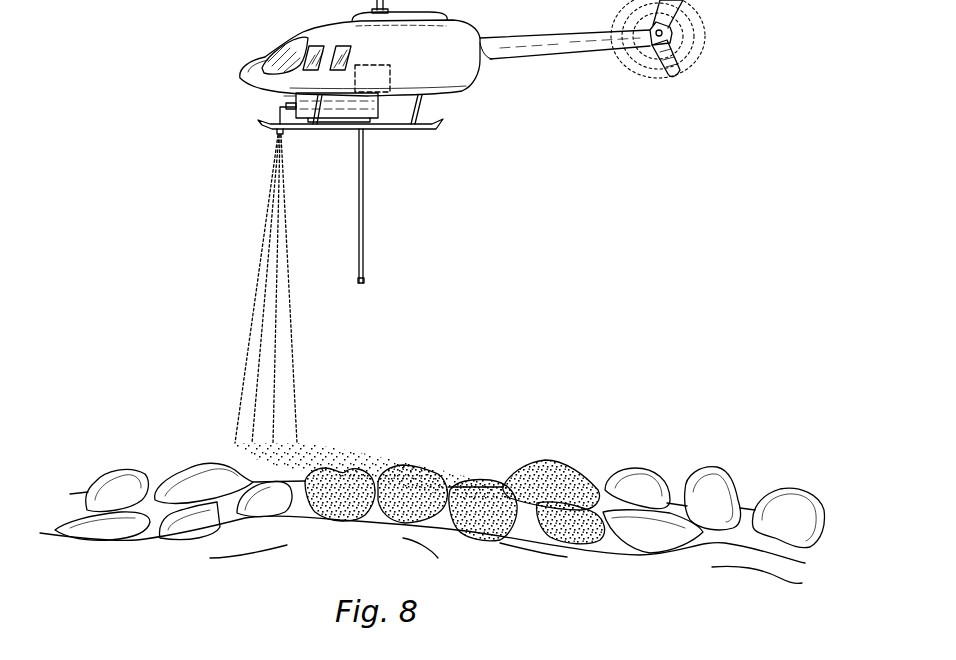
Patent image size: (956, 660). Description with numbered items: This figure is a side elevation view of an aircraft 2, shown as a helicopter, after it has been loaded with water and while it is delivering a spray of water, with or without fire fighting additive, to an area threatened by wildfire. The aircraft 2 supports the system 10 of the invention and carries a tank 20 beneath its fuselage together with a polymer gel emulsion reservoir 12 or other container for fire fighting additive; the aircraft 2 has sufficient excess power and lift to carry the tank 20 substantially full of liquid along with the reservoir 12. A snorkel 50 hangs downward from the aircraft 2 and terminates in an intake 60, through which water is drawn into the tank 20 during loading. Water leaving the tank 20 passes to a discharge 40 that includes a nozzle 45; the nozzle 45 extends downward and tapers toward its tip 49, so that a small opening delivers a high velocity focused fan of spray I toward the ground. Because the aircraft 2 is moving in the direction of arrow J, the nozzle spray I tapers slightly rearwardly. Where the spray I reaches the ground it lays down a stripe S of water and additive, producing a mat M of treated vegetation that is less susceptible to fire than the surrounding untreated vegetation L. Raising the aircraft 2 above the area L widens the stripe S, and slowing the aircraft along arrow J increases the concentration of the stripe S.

The aircraft 2 is at (446, 67).
The system 10 is at (450, 143).
The polymer gel emulsion reservoir 12 is at (371, 76).
The tank 20 is at (380, 104).
The discharge 40 is at (267, 100).
The nozzle 45 is at (280, 107).
The tip 49 is at (277, 126).
The snorkel 50 is at (376, 237).
The intake 60 is at (364, 283).
The arrow of aircraft motion J is at (569, 87).
The nozzle spray I is at (360, 394).
The stripe S is at (414, 473).
The mat of treated vegetation M is at (520, 466).
The untreated vegetation / area to be treated L is at (705, 488).